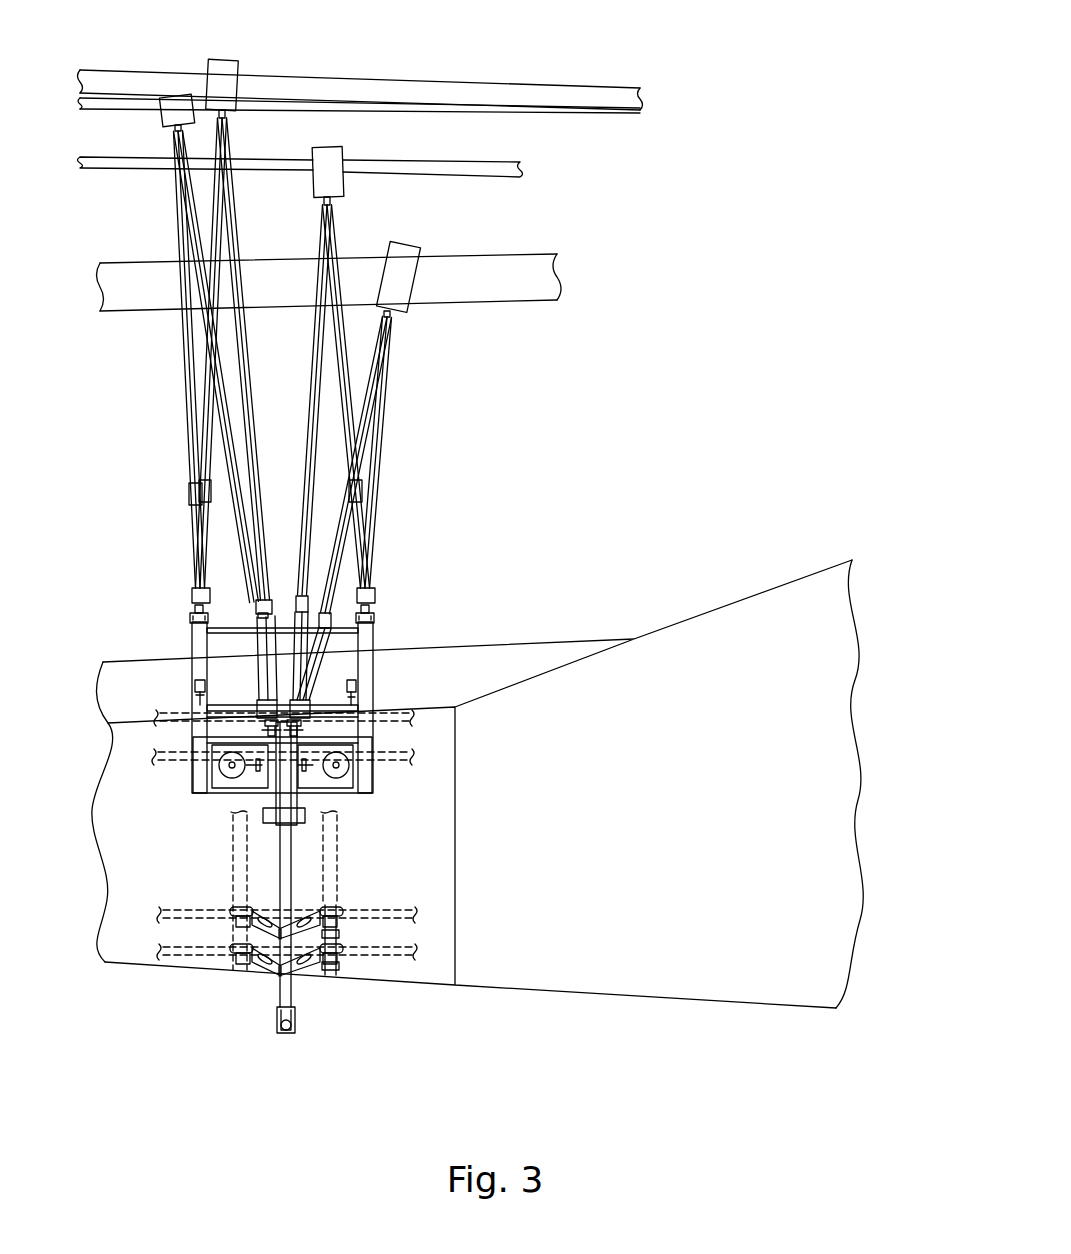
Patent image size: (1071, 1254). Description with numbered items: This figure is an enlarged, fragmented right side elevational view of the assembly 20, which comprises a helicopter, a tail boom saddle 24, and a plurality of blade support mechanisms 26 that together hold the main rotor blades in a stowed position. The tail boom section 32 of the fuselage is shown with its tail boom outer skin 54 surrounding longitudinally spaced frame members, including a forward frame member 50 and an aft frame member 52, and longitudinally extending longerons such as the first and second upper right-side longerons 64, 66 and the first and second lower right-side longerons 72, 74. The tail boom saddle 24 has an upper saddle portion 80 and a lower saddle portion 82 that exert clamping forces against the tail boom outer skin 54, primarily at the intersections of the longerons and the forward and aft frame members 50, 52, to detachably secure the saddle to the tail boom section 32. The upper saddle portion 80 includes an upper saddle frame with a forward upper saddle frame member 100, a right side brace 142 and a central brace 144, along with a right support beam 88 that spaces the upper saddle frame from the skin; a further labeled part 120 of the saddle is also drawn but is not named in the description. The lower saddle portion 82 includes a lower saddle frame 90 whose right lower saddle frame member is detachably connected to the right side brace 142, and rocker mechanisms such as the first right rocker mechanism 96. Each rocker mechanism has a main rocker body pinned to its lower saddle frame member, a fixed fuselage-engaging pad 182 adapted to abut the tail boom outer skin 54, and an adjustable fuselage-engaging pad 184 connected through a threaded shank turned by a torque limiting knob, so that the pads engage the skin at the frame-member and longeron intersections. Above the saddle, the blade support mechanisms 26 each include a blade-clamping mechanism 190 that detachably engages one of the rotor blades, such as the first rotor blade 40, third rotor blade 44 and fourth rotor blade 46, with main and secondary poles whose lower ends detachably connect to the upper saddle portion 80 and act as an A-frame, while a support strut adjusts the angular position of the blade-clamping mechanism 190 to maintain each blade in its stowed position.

The assembly 20 is at (609, 513).
The tail boom saddle 24 is at (182, 621).
The blade support mechanism 26 is at (248, 203).
The tail boom section 32 is at (477, 808).
The first rotor blade 40 is at (533, 287).
The third rotor blade 44 is at (100, 102).
The fourth rotor blade 46 is at (428, 86).
The forward frame member 50 is at (335, 850).
The aft frame member 52 is at (235, 843).
The tail boom outer skin 54 is at (121, 832).
The first upper right-side longeron 64 is at (382, 713).
The second upper right-side longeron 66 is at (394, 758).
The first lower right-side longeron 72 is at (165, 912).
The second lower right-side longeron 74 is at (172, 955).
The upper saddle portion 80 is at (384, 637).
The lower saddle portion 82 is at (278, 992).
The second (right) support beam 88 is at (232, 705).
The lower saddle frame 90 is at (299, 993).
The first right rocker mechanism 96 is at (300, 918).
The forward upper saddle frame member 100 is at (309, 672).
The frame upright 120 is at (197, 645).
The right side brace 142 is at (222, 783).
The central brace 144 is at (283, 627).
The fixed fuselage-engaging pad 182 is at (233, 910).
The adjustable fuselage-engaging pad 184 is at (343, 911).
The blade-clamping mechanism 190 is at (225, 68).